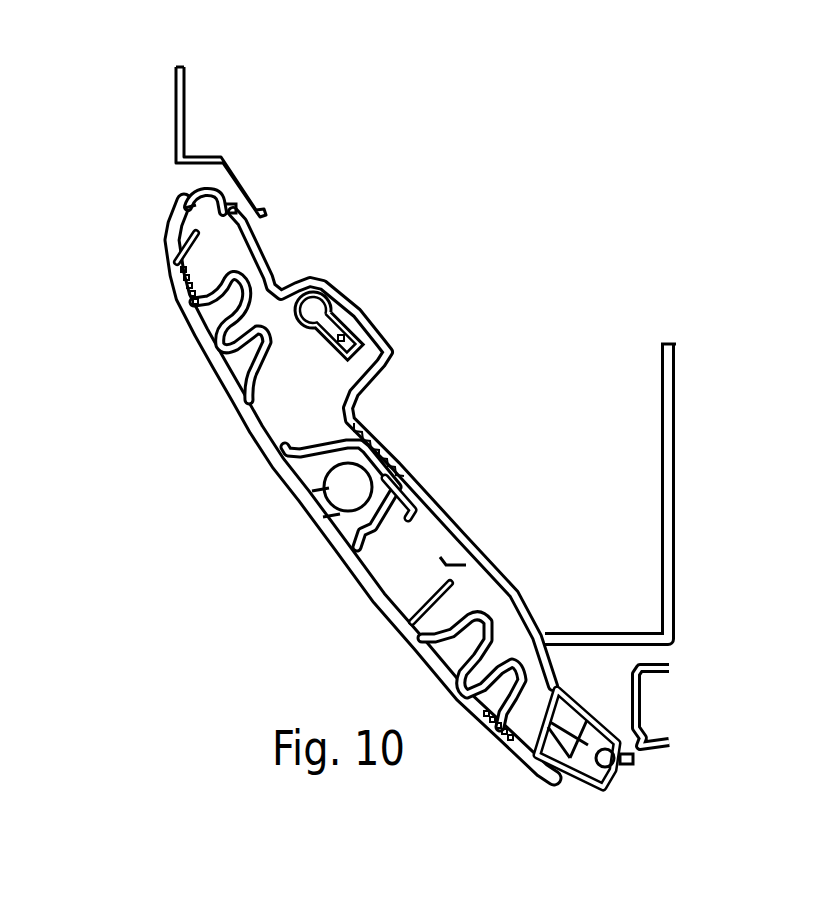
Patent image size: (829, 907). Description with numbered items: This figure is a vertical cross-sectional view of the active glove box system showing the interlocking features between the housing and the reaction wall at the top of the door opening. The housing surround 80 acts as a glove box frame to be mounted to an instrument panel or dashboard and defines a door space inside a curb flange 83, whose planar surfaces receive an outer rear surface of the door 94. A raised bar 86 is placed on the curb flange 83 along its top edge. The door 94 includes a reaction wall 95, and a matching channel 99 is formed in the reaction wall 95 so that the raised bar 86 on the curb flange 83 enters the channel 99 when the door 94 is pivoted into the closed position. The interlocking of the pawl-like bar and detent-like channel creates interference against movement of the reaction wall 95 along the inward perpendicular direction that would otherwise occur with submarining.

The housing surround 80 is at (163, 85).
The curb flange 83 is at (227, 179).
The raised bar 86 is at (245, 208).
The door 94 is at (259, 472).
The reaction wall 95 is at (263, 262).
The channel 99 is at (221, 211).